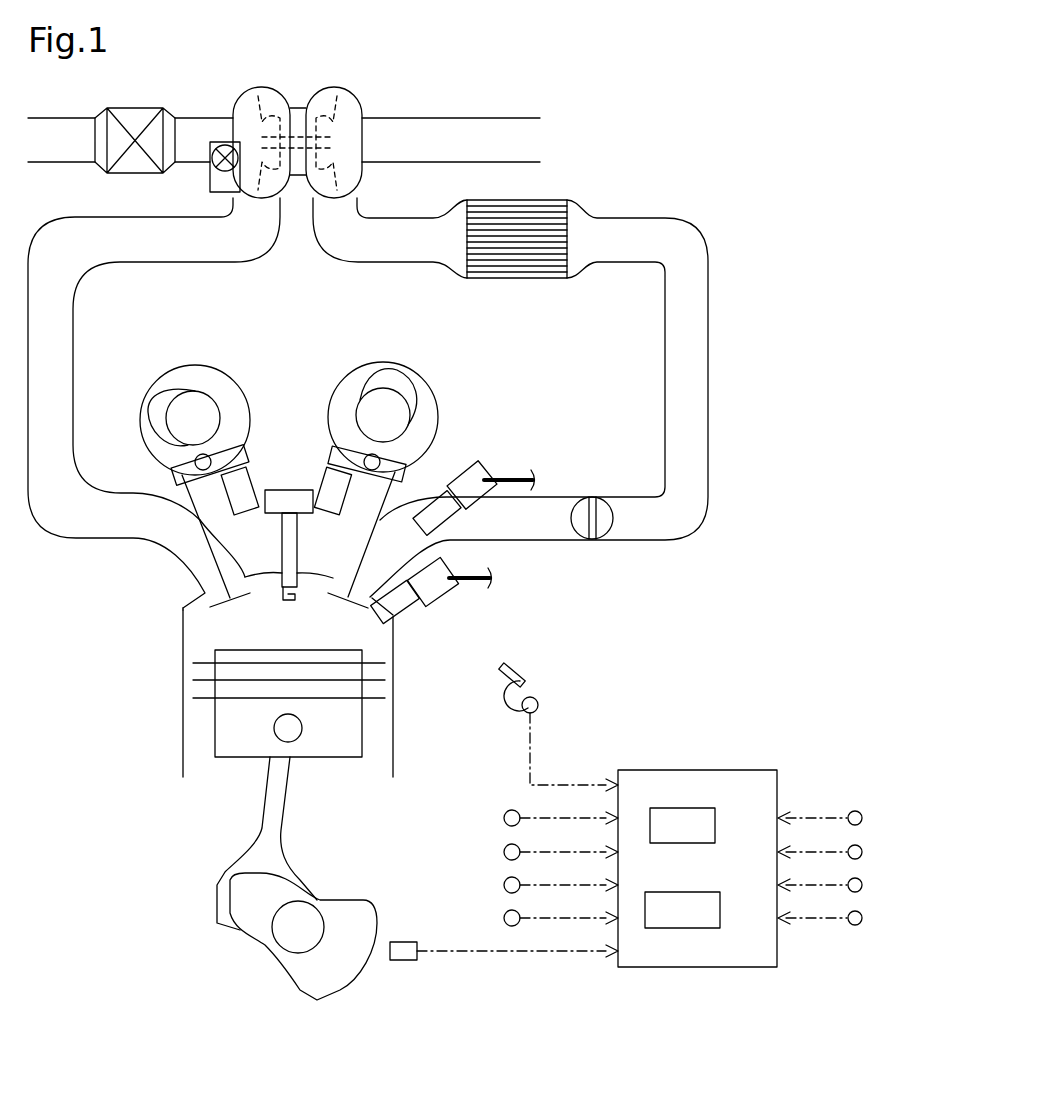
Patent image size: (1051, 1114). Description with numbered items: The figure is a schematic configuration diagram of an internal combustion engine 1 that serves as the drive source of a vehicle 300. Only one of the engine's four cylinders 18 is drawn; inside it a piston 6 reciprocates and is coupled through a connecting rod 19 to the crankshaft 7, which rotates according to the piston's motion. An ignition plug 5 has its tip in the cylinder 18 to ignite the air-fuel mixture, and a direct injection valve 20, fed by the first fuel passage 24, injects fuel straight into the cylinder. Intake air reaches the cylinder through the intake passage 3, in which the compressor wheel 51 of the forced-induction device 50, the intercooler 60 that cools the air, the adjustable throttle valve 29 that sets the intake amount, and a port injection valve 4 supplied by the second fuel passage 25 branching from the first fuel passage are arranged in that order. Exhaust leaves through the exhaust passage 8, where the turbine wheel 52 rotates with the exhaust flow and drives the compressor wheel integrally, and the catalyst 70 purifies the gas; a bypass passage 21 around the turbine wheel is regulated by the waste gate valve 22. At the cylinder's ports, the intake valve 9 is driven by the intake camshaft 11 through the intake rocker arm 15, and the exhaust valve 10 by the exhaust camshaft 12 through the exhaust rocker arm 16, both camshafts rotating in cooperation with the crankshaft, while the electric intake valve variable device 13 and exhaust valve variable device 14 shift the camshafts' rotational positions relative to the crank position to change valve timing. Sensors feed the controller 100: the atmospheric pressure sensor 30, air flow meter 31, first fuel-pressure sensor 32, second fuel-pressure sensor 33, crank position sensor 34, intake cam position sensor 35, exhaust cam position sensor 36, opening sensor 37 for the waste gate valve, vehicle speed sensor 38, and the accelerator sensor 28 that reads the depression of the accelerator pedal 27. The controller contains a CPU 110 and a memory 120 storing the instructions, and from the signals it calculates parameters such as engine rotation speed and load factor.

The internal combustion engine 1 is at (699, 148).
The vehicle 300 is at (682, 78).
The intake passage 3 is at (456, 117).
The port injection valve 4 is at (470, 468).
The ignition plug 5 is at (282, 545).
The piston 6 is at (341, 758).
The crankshaft 7 is at (336, 899).
The exhaust passage 8 is at (200, 117).
The intake valve 9 is at (352, 574).
The exhaust valve 10 is at (213, 567).
The intake camshaft 11 is at (372, 405).
The exhaust camshaft 12 is at (183, 430).
The intake valve variable device 13 is at (438, 408).
The exhaust valve variable device 14 is at (148, 384).
The intake rocker arm 15 is at (330, 458).
The exhaust rocker arm 16 is at (246, 466).
The cylinder 18 is at (368, 637).
The connecting rod 19 is at (262, 808).
The direct injection valve 20 is at (440, 605).
The bypass passage 21 is at (230, 193).
The waste gate valve 22 is at (222, 170).
The first fuel passage 24 is at (490, 578).
The second fuel passage 25 is at (520, 470).
The accelerator pedal 27 is at (505, 665).
The accelerator sensor 28 is at (540, 705).
The throttle valve 29 is at (613, 512).
The atmospheric pressure sensor 30 is at (504, 818).
The air flow meter 31 is at (504, 852).
The first fuel-pressure sensor 32 is at (504, 885).
The second fuel-pressure sensor 33 is at (504, 918).
The crank position sensor 34 is at (408, 941).
The intake cam position sensor 35 is at (862, 818).
The exhaust cam position sensor 36 is at (862, 852).
The opening sensor 37 is at (862, 885).
The vehicle speed sensor 38 is at (862, 918).
The forced-induction device 50 is at (386, 72).
The compressor wheel 51 is at (355, 87).
The turbine wheel 52 is at (241, 87).
The intercooler 60 is at (500, 200).
The catalyst 70 is at (136, 107).
The controller 100 is at (667, 769).
The CPU 110 is at (690, 808).
The memory 120 is at (690, 892).